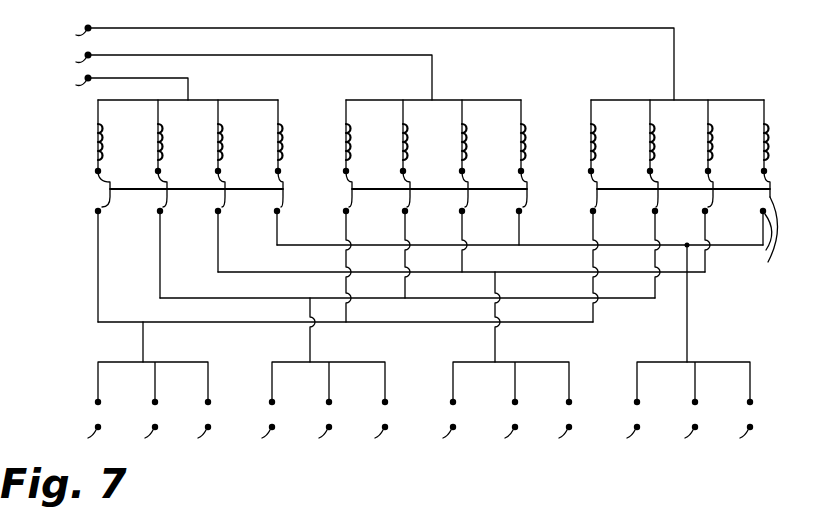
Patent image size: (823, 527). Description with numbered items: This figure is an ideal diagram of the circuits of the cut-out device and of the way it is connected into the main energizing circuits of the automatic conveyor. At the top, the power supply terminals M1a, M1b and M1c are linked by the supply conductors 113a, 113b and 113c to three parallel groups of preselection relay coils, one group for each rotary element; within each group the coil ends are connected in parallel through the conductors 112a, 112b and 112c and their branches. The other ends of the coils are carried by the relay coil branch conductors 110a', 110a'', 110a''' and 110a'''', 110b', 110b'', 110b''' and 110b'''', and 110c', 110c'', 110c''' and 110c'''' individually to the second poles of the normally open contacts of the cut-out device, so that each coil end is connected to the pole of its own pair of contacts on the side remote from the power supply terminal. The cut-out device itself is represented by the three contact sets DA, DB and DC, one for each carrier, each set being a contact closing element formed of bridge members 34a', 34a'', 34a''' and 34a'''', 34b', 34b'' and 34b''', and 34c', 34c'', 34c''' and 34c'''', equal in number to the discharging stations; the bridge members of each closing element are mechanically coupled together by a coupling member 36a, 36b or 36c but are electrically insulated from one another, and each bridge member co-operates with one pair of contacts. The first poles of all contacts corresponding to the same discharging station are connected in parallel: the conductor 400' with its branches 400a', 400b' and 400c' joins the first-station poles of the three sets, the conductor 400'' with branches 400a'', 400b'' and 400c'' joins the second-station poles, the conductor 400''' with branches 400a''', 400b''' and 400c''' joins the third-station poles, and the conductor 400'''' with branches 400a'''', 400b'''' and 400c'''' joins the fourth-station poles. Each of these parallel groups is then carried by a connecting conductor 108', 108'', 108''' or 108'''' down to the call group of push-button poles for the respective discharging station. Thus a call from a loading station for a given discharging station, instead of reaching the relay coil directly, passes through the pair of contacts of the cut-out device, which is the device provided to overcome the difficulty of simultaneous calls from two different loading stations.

The power supply terminal M1a is at (67, 78).
The power supply terminal M1b is at (67, 55).
The power supply terminal M1c is at (67, 29).
The supply conductor 113a is at (157, 77).
The supply conductor 113b is at (221, 55).
The supply conductor 113c is at (133, 30).
The parallel connecting conductor 112a is at (212, 100).
The parallel connecting conductor 112b is at (461, 95).
The parallel connecting conductor 112c is at (706, 95).
The relay coil branch conductor 110a' is at (78, 139).
The relay coil branch conductor 110a'' is at (136, 139).
The relay coil branch conductor 110a''' is at (194, 139).
The relay coil branch conductor 110a'''' is at (252, 139).
The relay coil branch conductor 110b' is at (327, 139).
The relay coil branch conductor 110b'' is at (382, 139).
The relay coil branch conductor 110b''' is at (439, 139).
The relay coil branch conductor 110b'''' is at (496, 139).
The relay coil branch conductor 110c' is at (572, 139).
The relay coil branch conductor 110c'' is at (629, 139).
The relay coil branch conductor 110c''' is at (685, 139).
The relay coil branch conductor 110c'''' is at (739, 139).
The cut-out device contact set DA is at (182, 189).
The cut-out device contact set DB is at (422, 189).
The cut-out device contact set DC is at (667, 189).
The bridge member 34a' is at (78, 221).
The bridge member 34a'' is at (140, 221).
The bridge member 34a''' is at (197, 221).
The bridge member 34a'''' is at (254, 221).
The bridge member 34b' is at (381, 220).
The bridge member 34b'' is at (438, 220).
The bridge member 34b''' is at (494, 220).
The bridge member 34c' is at (614, 220).
The bridge member 34c'' is at (673, 212).
The bridge member 34c''' is at (725, 211).
The bridge member 34c'''' is at (769, 248).
The coupling member 36a is at (320, 220).
The coupling member 36b is at (551, 211).
The coupling member 36c is at (774, 184).
The parallel connecting conductor 400' is at (345, 328).
The parallel connecting conductor 400'' is at (407, 305).
The parallel connecting conductor 400''' is at (461, 280).
The parallel connecting conductor 400'''' is at (520, 253).
The branch conductor 400a' is at (71, 266).
The branch conductor 400a'' is at (132, 254).
The branch conductor 400a''' is at (193, 241).
The branch conductor 400a'''' is at (250, 230).
The branch conductor 400b' is at (371, 266).
The branch conductor 400b'' is at (431, 254).
The branch conductor 400b''' is at (490, 241).
The branch conductor 400b'''' is at (550, 228).
The branch conductor 400c' is at (572, 266).
The branch conductor 400c'' is at (632, 254).
The branch conductor 400c''' is at (684, 241).
The branch conductor 400c'''' is at (736, 228).
The connecting conductor 108' is at (122, 342).
The connecting conductor 108'' is at (290, 330).
The connecting conductor 108''' is at (472, 317).
The connecting conductor 108'''' is at (660, 303).